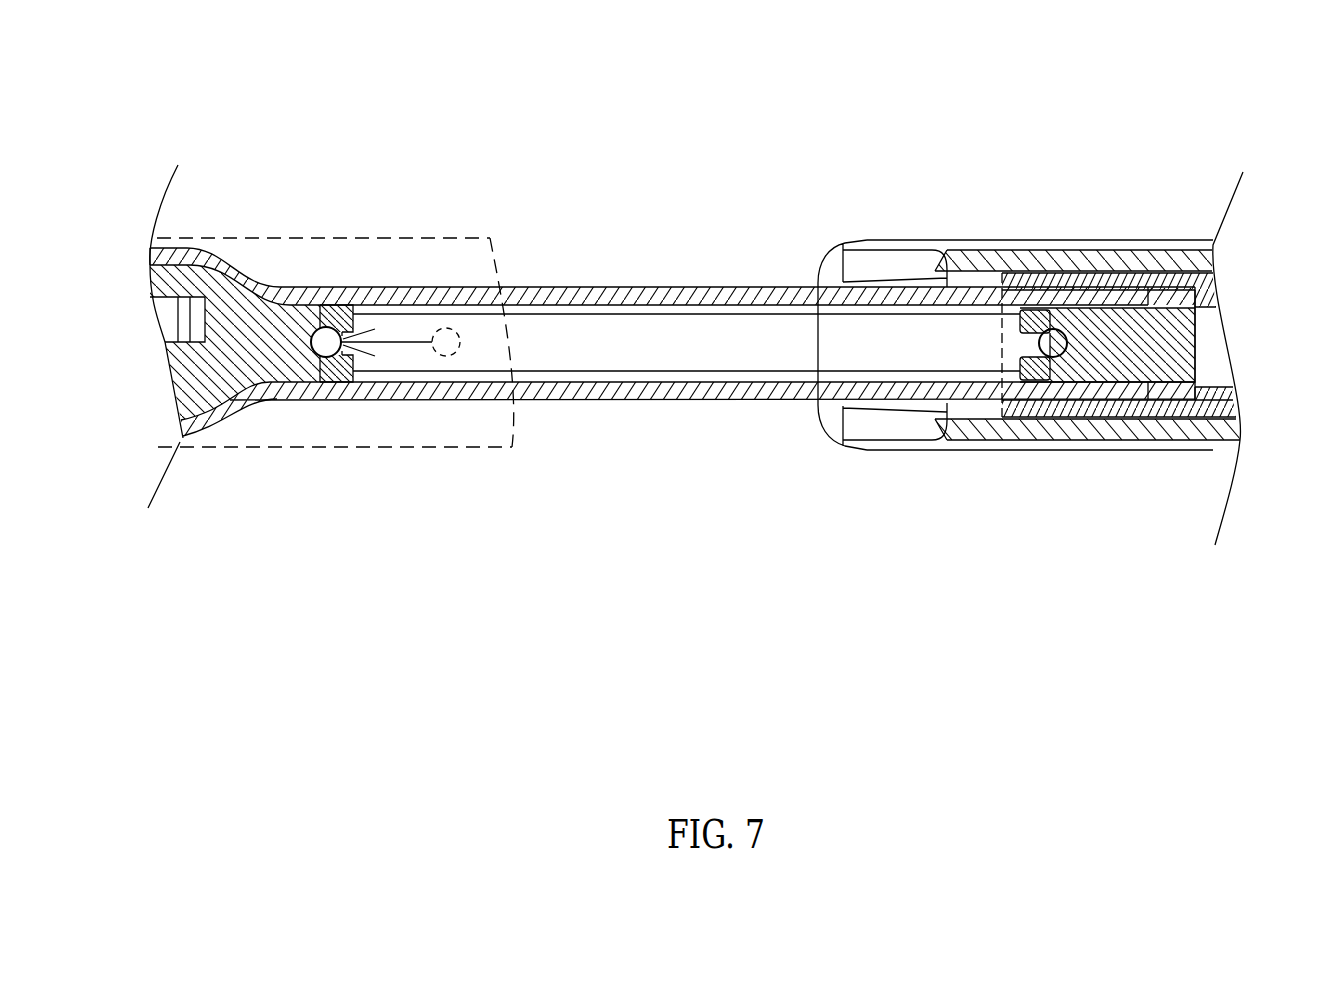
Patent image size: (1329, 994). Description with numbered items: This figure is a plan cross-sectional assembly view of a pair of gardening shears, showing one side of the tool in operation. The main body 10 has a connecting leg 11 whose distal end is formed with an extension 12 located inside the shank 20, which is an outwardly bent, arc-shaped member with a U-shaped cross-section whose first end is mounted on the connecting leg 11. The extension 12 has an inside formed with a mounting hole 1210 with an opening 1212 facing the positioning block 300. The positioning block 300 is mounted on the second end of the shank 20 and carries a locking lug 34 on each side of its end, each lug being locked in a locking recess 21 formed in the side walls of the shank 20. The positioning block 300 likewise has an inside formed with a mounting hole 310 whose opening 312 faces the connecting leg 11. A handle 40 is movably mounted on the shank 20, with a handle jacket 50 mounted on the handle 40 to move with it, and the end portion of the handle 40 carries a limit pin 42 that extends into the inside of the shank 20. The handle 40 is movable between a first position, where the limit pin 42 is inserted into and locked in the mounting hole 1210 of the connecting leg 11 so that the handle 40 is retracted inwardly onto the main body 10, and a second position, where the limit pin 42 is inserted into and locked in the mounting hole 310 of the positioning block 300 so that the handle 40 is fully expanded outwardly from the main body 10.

The main body 10 is at (173, 380).
The connecting leg 11 is at (160, 282).
The extension 12 is at (315, 327).
The mounting hole 1210 is at (258, 415).
The opening 1212 is at (343, 313).
The shank 20 is at (668, 402).
The locking recess 21 is at (1113, 430).
The locking lug 34 is at (1166, 430).
The handle 40 is at (1127, 268).
The limit pin 42 is at (448, 355).
The handle jacket 50 is at (1006, 241).
The positioning block 300 is at (1200, 350).
The mounting hole 310 is at (1060, 272).
The opening 312 is at (1028, 348).